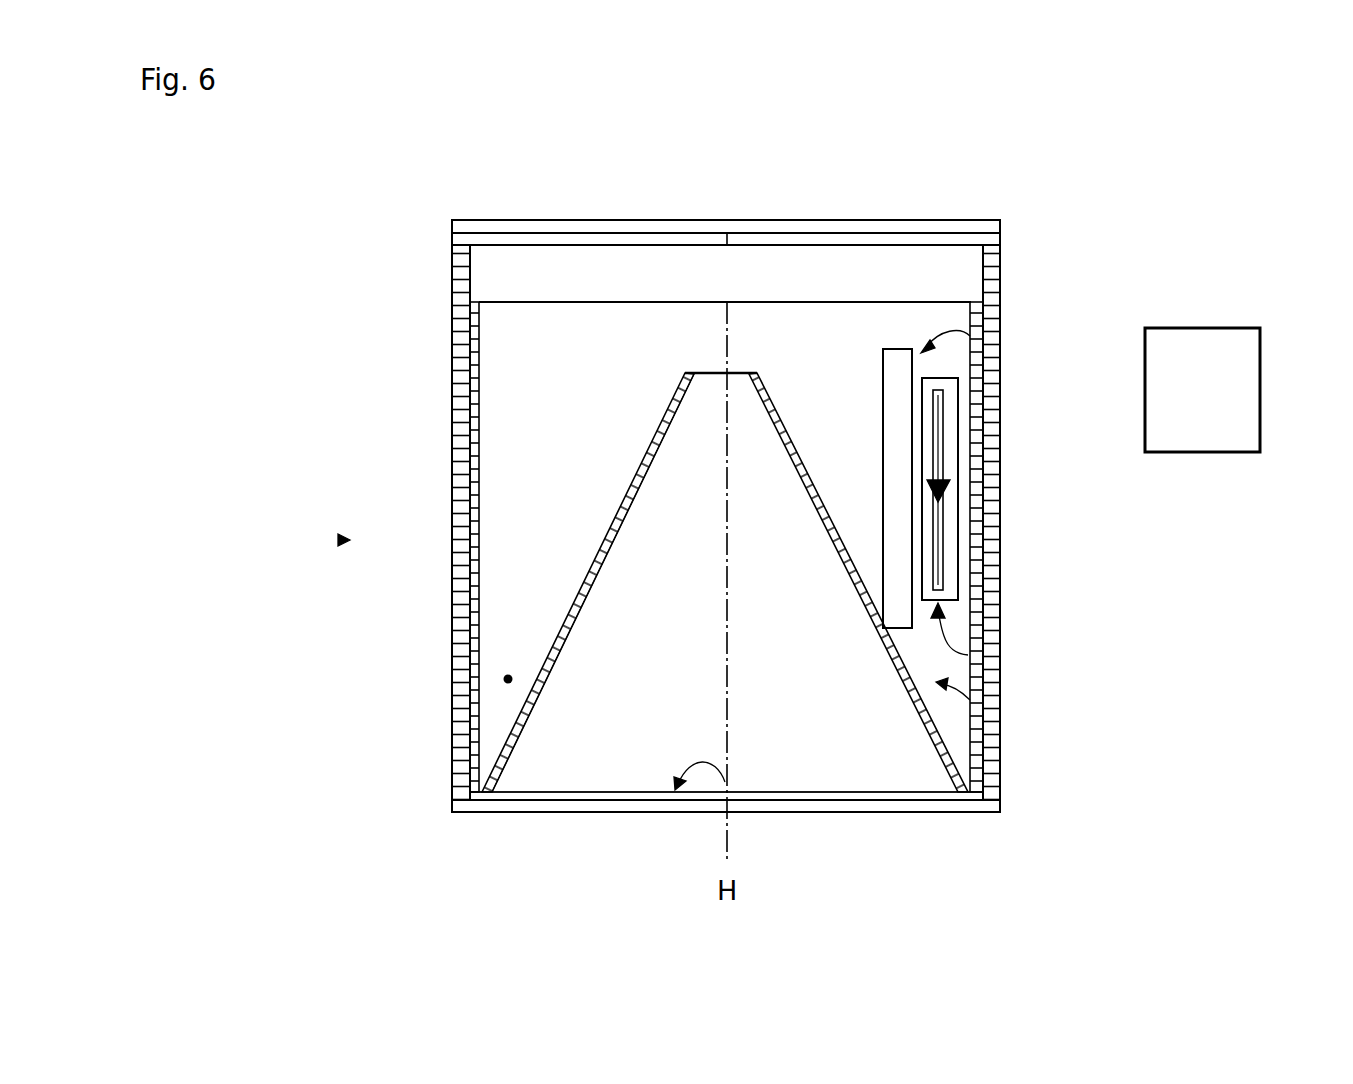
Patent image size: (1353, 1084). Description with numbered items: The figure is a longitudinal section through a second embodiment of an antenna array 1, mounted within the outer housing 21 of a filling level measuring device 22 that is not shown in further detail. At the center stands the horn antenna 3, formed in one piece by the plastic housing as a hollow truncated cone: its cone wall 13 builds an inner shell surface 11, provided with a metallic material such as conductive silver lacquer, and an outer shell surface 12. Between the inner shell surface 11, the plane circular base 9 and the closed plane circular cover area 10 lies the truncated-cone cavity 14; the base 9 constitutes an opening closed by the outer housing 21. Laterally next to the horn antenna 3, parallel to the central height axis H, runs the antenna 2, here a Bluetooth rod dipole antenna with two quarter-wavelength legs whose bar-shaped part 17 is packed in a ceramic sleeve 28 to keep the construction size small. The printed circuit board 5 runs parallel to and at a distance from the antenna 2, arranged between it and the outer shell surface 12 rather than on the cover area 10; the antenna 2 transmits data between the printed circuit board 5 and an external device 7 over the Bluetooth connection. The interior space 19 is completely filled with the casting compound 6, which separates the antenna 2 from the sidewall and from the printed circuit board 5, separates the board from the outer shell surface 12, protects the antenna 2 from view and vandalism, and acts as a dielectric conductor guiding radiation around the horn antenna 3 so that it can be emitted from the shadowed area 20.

The antenna array 1 is at (848, 276).
The rod dipole antenna 2 is at (968, 655).
The horn antenna 3 is at (976, 722).
The printed circuit board 5 is at (975, 346).
The casting compound 6 is at (508, 635).
The external device 7 is at (1212, 358).
The base 9 is at (572, 795).
The cover area 10 is at (735, 358).
The inner shell surface 11 is at (627, 540).
The outer shell surface 12 is at (613, 463).
The cone wall 13 is at (662, 412).
The cavity 14 is at (560, 718).
The bar-shaped part 17 is at (950, 530).
The interior space 19 is at (505, 680).
The shadowed area 20 is at (520, 445).
The outer housing 21 is at (868, 812).
The filling level measuring device 22 is at (340, 540).
The ceramic sleeve 28 is at (953, 416).